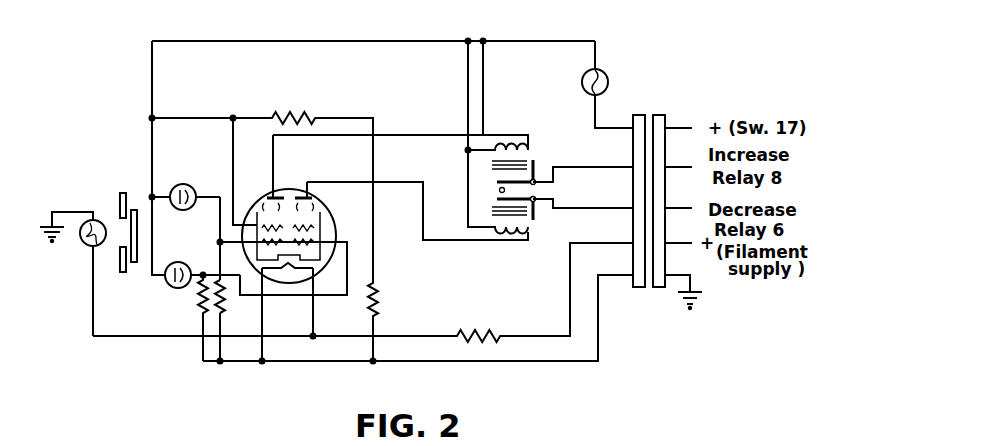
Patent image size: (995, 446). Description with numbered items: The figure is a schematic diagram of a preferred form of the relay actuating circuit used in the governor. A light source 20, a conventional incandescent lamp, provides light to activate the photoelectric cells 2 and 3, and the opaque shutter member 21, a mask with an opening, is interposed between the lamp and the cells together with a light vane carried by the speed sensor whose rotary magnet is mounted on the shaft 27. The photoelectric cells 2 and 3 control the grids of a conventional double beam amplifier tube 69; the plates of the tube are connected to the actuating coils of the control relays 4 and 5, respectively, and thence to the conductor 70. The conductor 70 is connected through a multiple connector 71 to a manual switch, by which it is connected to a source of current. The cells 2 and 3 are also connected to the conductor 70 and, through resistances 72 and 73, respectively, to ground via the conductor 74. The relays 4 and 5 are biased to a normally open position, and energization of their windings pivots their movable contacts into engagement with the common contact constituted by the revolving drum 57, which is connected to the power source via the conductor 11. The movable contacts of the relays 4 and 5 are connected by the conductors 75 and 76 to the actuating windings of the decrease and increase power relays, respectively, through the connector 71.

The conductor 70 is at (371, 31).
The conductor 11 is at (486, 108).
The relay 5 is at (553, 157).
The relay 4 is at (549, 213).
The rotary contact drum 57 is at (495, 194).
The conductor 76 is at (614, 168).
The conductor 75 is at (614, 208).
The multiple connector 71 is at (650, 300).
The conductor 74 is at (517, 338).
The resistance 73 is at (227, 310).
The resistance 72 is at (198, 308).
The double beam amplifier tube 69 is at (337, 227).
The photoelectric cell 3 is at (190, 186).
The photoelectric cell 2 is at (189, 262).
The shutter member 21 is at (124, 186).
The shaft 27 is at (139, 263).
The light source 20 is at (85, 249).